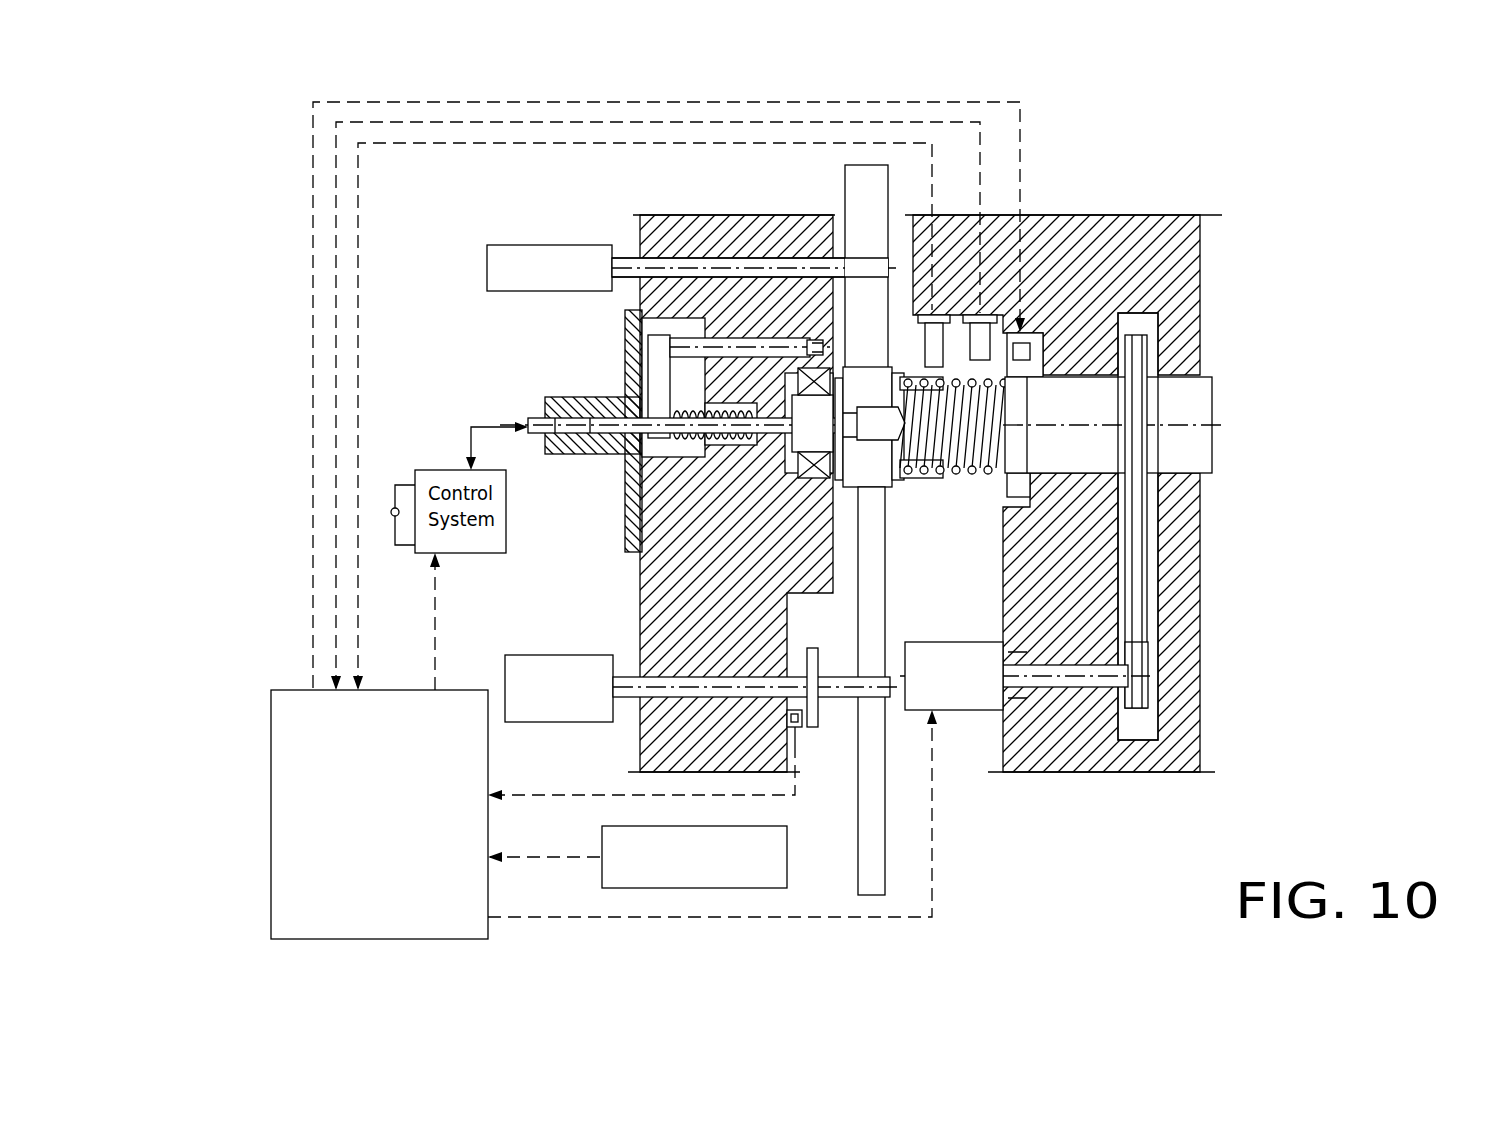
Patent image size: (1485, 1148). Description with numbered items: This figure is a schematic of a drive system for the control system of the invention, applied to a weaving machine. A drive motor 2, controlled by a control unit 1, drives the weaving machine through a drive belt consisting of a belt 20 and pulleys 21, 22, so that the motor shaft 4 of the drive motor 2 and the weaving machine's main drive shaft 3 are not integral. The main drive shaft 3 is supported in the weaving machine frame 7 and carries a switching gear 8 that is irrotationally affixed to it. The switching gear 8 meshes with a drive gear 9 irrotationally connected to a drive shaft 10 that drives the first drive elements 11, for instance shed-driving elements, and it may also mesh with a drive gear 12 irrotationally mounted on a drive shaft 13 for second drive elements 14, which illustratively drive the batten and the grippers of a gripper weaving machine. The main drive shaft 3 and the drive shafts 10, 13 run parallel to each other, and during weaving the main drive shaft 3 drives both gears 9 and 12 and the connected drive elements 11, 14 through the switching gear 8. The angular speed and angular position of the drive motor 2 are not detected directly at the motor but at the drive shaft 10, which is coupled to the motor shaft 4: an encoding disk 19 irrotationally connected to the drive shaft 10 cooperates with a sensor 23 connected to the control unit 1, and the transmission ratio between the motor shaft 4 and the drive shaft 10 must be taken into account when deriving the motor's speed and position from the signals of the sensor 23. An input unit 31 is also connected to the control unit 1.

The control unit 1 is at (300, 793).
The drive motor 2 is at (952, 700).
The main drive shaft 3 is at (1203, 448).
The motor shaft 4 is at (1070, 682).
The weaving machine frame 7 is at (682, 735).
The switching gear 8 is at (858, 375).
The drive gear 9 is at (877, 785).
The drive shaft 10 is at (865, 695).
The first drive elements 11 is at (565, 667).
The drive gear 12 is at (862, 190).
The drive shaft 13 is at (630, 257).
The second drive elements 14 is at (572, 253).
The encoding disk 19 is at (813, 662).
The belt 20 is at (1137, 588).
The pulley 21 is at (1138, 688).
The pulley 22 is at (1147, 355).
The sensor 23 is at (795, 740).
The input unit 31 is at (715, 873).